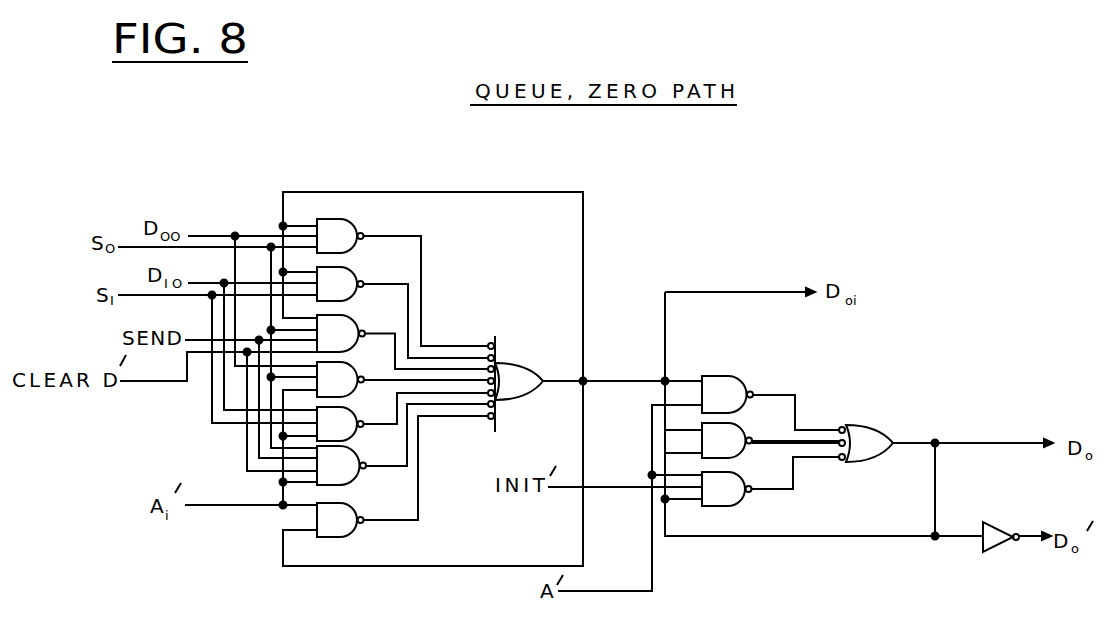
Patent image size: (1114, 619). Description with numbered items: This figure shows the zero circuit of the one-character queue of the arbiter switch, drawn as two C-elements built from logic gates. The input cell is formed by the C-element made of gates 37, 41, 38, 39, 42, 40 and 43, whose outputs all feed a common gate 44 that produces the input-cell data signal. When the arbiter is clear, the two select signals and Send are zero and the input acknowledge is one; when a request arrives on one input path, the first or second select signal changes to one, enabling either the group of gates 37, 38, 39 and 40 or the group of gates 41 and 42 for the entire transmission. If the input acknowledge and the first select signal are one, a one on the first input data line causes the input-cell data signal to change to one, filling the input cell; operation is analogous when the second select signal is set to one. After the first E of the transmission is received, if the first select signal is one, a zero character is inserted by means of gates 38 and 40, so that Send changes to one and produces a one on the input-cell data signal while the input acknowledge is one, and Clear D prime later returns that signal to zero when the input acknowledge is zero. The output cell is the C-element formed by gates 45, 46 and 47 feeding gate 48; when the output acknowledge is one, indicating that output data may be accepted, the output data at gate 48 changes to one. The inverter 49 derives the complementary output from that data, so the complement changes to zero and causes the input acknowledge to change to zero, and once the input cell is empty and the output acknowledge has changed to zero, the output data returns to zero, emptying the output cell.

The gate 37 is at (357, 221).
The gate 41 is at (357, 268).
The gate 38 is at (350, 315).
The gate 39 is at (347, 361).
The gate 42 is at (345, 407).
The gate 40 is at (352, 458).
The gate 43 is at (353, 503).
The gate 44 is at (512, 399).
The gate 45 is at (735, 377).
The gate 46 is at (735, 424).
The gate 47 is at (738, 504).
The gate 48 is at (868, 427).
The inverter 49 is at (1002, 546).